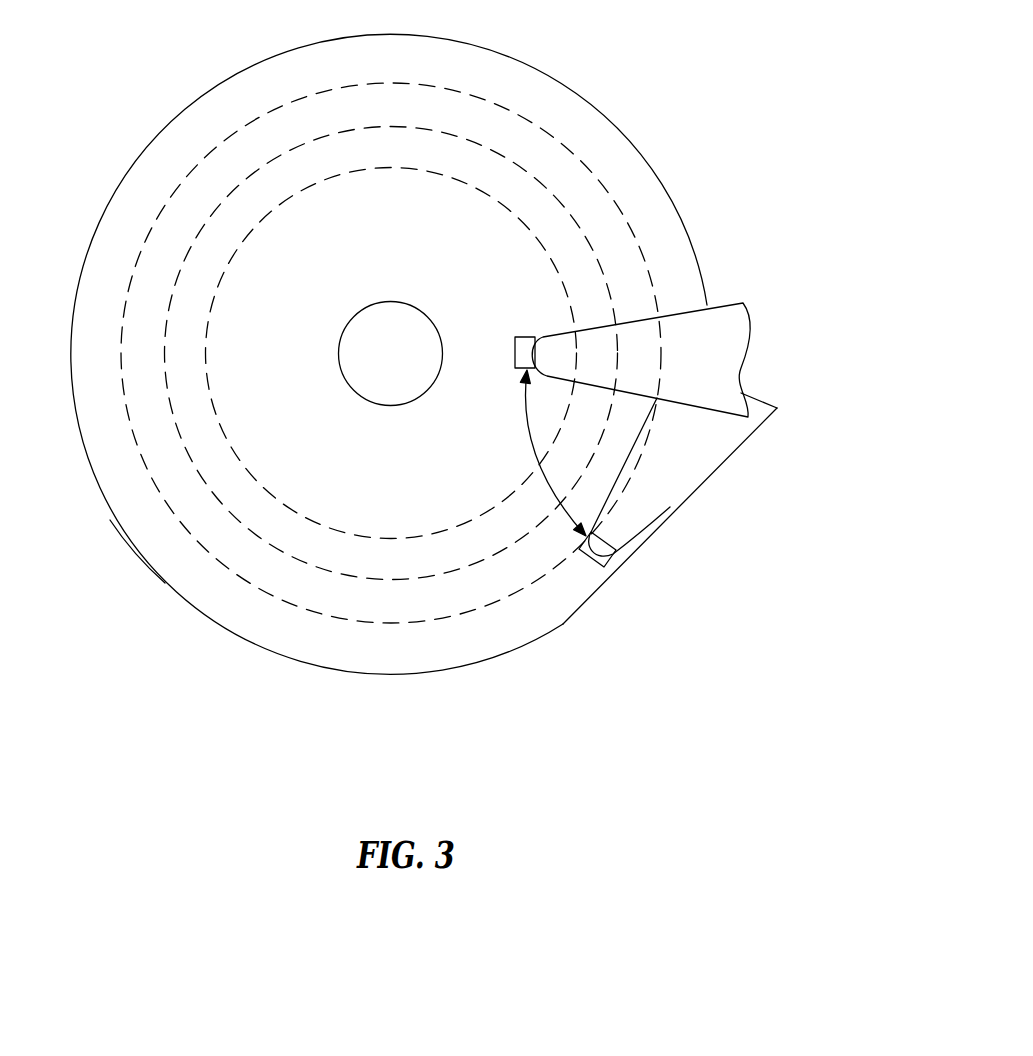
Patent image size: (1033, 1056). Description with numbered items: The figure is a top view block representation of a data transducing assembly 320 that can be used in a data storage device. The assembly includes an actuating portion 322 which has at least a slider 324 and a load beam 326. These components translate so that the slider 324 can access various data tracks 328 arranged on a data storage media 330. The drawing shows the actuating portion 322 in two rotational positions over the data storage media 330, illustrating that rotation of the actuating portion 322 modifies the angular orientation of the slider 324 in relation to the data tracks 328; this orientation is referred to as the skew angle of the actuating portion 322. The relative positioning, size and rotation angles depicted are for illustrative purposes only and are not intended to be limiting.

The data transducing assembly 320 is at (660, 80).
The actuating portion 322 is at (735, 458).
The slider 324 is at (607, 563).
The load beam 326 is at (584, 439).
The data tracks 328 is at (220, 212).
The data storage media 330 is at (137, 550).